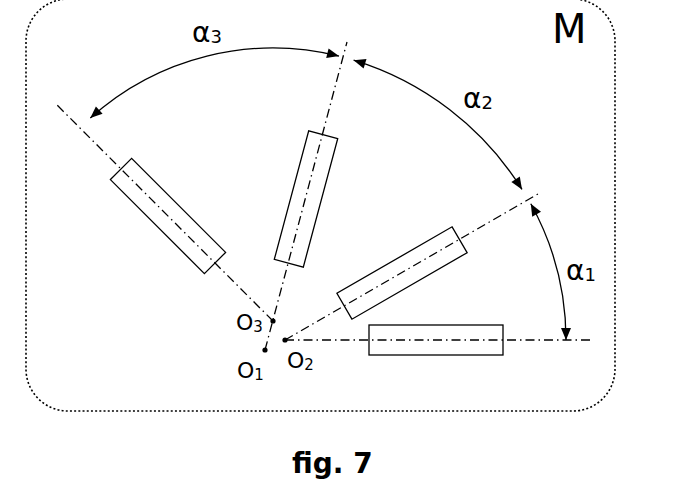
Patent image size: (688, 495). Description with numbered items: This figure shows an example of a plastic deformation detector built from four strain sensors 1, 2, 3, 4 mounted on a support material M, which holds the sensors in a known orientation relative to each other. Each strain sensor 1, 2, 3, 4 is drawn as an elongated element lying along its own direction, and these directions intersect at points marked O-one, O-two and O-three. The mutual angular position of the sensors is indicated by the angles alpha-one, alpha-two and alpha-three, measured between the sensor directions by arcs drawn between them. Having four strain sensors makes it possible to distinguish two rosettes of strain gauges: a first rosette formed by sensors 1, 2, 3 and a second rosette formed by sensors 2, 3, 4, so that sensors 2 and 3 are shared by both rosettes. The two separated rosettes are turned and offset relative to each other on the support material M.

The strain sensor 1 is at (436, 326).
The strain sensor 2 is at (402, 272).
The strain sensor 3 is at (305, 199).
The strain sensor 4 is at (167, 215).